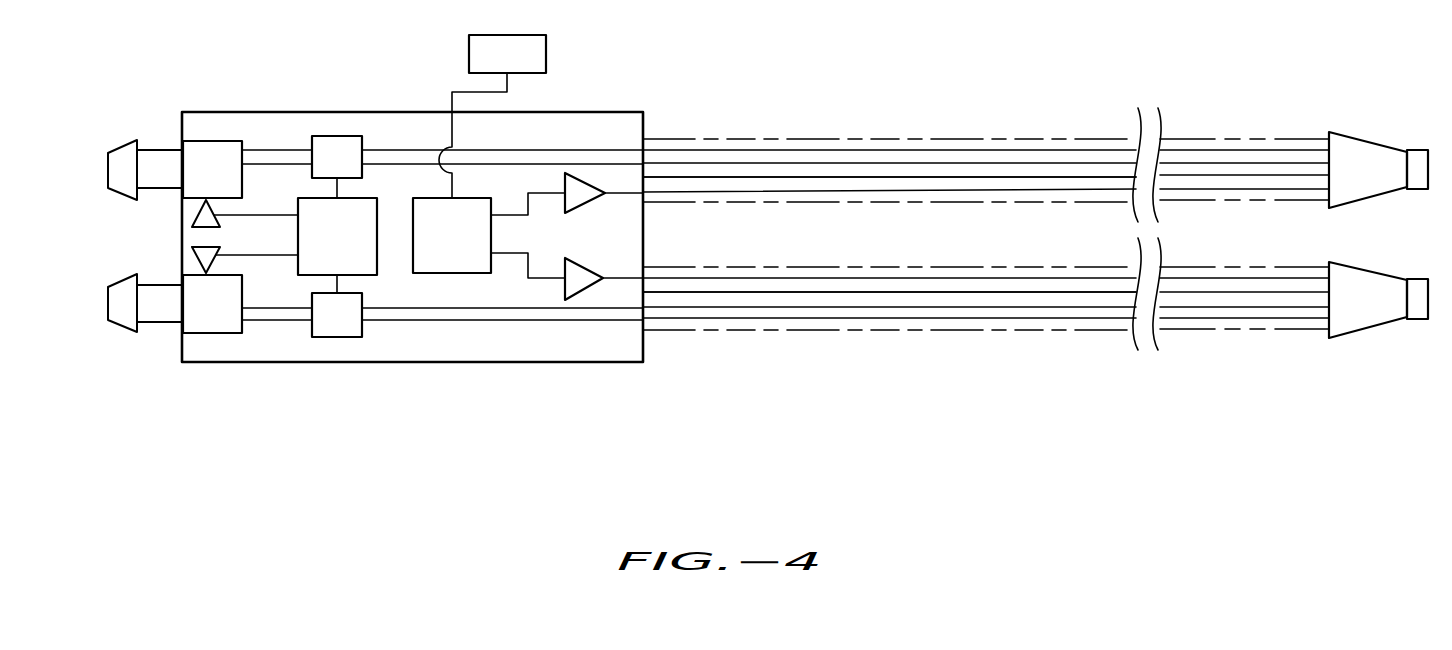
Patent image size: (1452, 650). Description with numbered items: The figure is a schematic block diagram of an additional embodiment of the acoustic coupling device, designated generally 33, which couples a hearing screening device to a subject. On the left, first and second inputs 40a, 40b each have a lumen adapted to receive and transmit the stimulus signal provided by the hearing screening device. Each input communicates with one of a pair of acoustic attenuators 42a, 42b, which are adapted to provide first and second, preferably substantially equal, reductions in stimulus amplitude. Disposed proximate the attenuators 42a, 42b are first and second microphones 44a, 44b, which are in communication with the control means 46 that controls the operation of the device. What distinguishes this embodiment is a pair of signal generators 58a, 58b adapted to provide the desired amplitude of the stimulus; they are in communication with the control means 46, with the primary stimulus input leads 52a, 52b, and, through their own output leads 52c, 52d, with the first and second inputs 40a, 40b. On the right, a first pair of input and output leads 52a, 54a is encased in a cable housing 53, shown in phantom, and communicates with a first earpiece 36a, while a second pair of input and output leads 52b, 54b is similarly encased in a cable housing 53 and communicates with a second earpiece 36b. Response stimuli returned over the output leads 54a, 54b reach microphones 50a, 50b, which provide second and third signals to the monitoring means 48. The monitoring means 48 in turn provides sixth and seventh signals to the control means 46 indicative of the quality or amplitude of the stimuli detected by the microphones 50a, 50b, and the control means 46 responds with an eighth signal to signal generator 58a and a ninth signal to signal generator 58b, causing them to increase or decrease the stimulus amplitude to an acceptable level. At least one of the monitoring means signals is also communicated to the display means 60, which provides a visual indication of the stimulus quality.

The acoustic coupling device 33 is at (386, 81).
The first earpiece 36a is at (1371, 140).
The second earpiece 36b is at (1371, 325).
The first input 40a is at (120, 140).
The second input 40b is at (120, 333).
The acoustic attenuator 42a is at (208, 141).
The acoustic attenuator 42b is at (212, 334).
The first microphone 44a is at (196, 215).
The second microphone 44b is at (196, 259).
The control means 46 is at (317, 207).
The monitoring means 48 is at (447, 262).
The microphone 50a is at (565, 185).
The microphone 50b is at (565, 285).
The primary stimulus input lead 52a is at (618, 148).
The primary stimulus input lead 52b is at (617, 322).
The output lead 52c is at (277, 157).
The output lead 52d is at (272, 316).
The cable housing 53 is at (893, 138).
The output lead 54a is at (688, 185).
The output lead 54b is at (839, 287).
The signal generator 58a is at (335, 136).
The signal generator 58b is at (335, 338).
The display means 60 is at (548, 48).